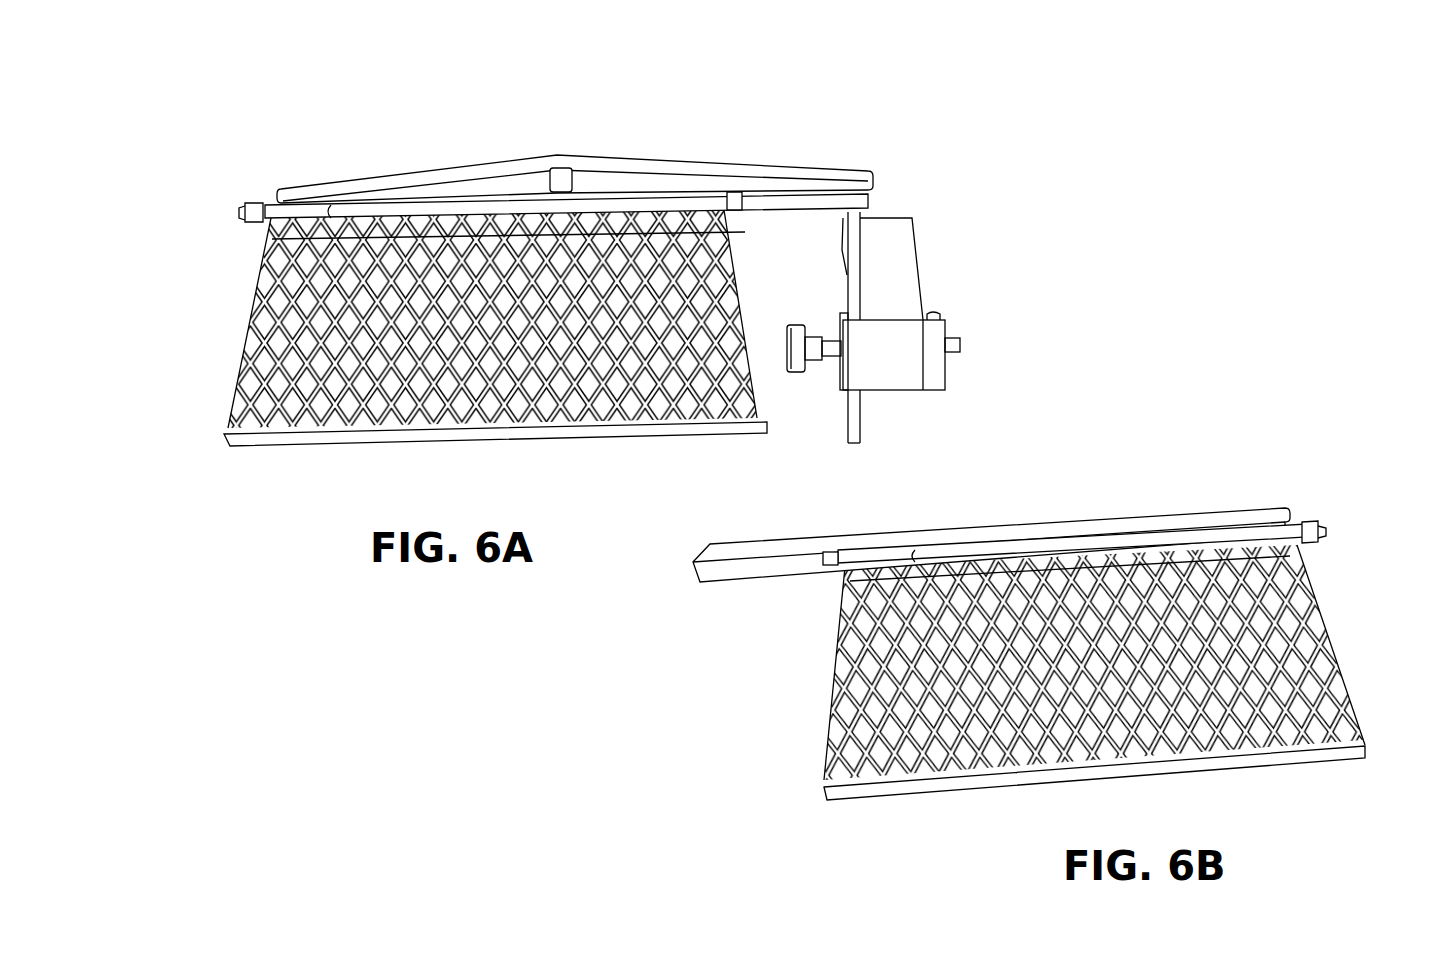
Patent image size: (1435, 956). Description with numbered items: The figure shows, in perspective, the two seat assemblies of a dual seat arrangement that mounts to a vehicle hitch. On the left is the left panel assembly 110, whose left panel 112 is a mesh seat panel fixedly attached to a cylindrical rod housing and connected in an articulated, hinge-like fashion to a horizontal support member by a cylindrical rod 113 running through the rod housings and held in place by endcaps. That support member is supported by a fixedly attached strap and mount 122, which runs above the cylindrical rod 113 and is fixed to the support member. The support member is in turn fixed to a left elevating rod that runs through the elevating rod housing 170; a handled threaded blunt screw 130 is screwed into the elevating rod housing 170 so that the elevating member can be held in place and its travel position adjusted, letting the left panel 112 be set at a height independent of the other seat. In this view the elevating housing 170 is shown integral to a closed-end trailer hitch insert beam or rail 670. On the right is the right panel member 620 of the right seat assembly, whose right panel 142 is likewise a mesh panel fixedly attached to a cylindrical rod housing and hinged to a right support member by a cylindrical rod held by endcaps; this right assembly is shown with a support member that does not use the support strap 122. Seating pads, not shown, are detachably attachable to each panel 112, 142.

In FIG. 6A, the left panel assembly 110 is at (613, 262).
In FIG. 6A, the left panel 112 is at (495, 423).
In FIG. 6A, the tube 113 is at (612, 203).
In FIG. 6A, the strap and mount 122 is at (517, 158).
In FIG. 6A, the handled threaded blunt screw 130 is at (795, 380).
In FIG. 6A, the elevating rod housing 170 is at (935, 368).
In FIG. 6A, the closed-end trailer hitch insert beam or rail 670 is at (918, 246).
In FIG. 6B, the right panel member 620 is at (1032, 526).
In FIG. 6B, the right panel 142 is at (960, 768).